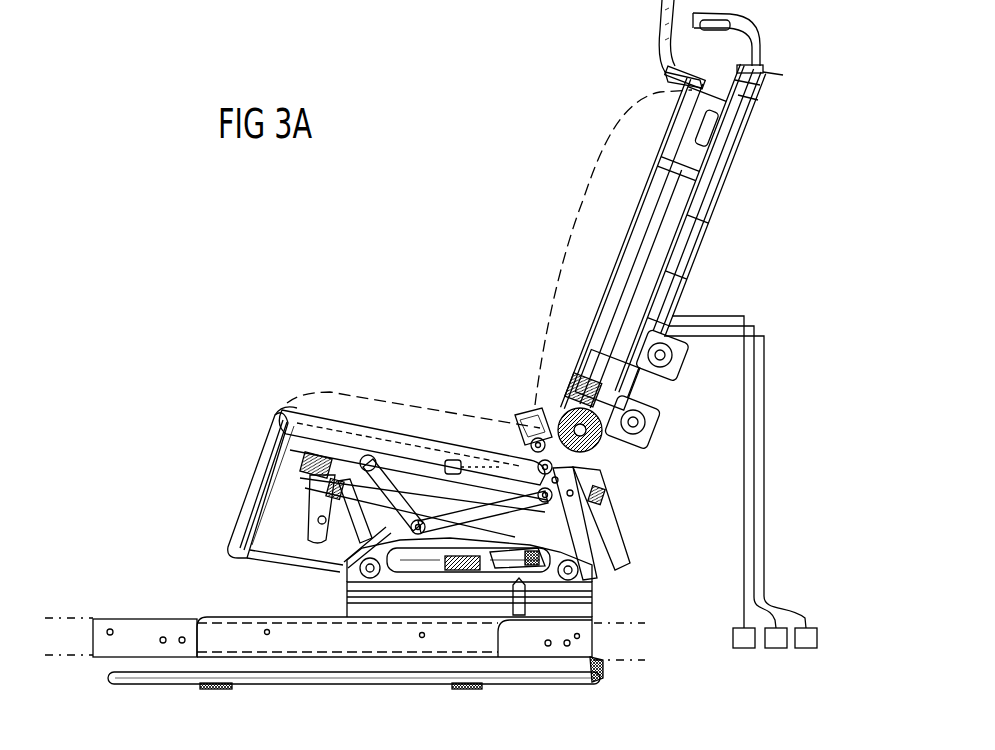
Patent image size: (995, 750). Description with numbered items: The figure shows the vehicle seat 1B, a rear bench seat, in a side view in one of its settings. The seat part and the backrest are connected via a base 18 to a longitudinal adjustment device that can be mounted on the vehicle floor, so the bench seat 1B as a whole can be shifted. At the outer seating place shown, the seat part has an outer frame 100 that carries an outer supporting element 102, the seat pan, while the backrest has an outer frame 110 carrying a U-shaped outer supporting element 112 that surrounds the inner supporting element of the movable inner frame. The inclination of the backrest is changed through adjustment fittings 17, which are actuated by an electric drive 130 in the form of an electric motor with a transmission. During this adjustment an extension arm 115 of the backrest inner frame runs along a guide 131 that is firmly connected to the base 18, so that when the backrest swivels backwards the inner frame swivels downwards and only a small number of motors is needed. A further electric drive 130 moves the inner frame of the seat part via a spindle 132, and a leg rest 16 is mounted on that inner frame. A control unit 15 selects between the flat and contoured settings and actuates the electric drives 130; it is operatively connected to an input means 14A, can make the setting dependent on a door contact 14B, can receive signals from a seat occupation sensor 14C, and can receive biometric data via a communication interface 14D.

The vehicle seat 1B is at (375, 333).
The outer frame 100 is at (418, 440).
The outer supporting element 102 is at (398, 447).
The seat occupation sensor 14C is at (455, 460).
The outer supporting element 112 is at (601, 312).
The electric drive 130 is at (622, 373).
The control unit 15 is at (681, 262).
The outer frame 110 is at (642, 290).
The adjustment fitting 17 is at (607, 440).
The extension arm 115 is at (605, 477).
The guide 131 is at (622, 534).
The leg rest 16 is at (240, 481).
The base 18 is at (410, 583).
The spindle 132 is at (503, 563).
The input means 14A is at (747, 648).
The door contact 14B is at (773, 648).
The communication interface 14D is at (808, 648).